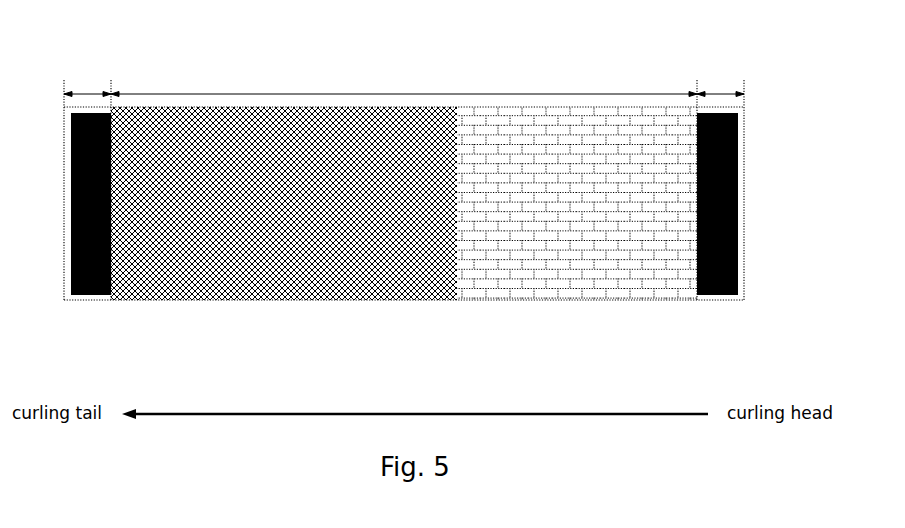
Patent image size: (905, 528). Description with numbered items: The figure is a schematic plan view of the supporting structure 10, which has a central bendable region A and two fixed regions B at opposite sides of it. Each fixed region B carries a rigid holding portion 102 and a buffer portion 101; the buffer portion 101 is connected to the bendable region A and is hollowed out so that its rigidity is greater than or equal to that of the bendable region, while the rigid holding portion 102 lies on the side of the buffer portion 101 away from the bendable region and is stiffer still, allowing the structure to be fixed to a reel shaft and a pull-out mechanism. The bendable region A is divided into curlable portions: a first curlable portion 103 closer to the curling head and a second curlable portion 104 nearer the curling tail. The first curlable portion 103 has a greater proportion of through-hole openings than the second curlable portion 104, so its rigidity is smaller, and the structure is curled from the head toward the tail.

The supporting structure 10 is at (63, 25).
The buffer portion 101 is at (68, 240).
The rigid holding portion 102 is at (68, 196).
The first curlable portion 103 is at (582, 300).
The second curlable portion 104 is at (338, 300).